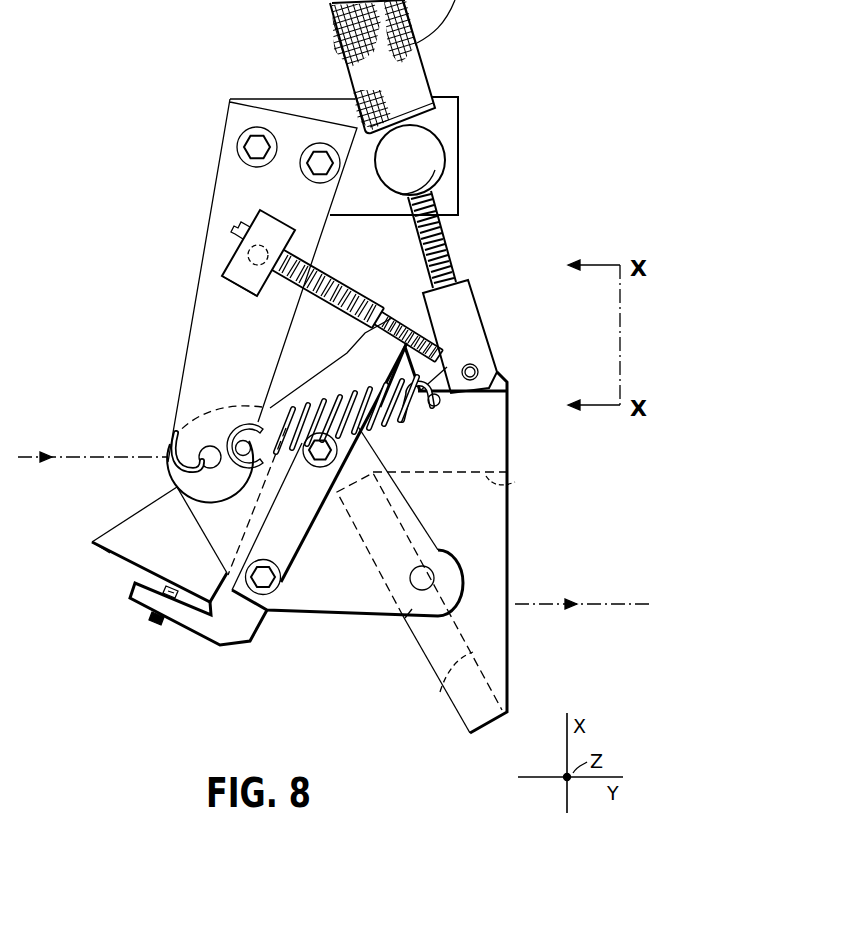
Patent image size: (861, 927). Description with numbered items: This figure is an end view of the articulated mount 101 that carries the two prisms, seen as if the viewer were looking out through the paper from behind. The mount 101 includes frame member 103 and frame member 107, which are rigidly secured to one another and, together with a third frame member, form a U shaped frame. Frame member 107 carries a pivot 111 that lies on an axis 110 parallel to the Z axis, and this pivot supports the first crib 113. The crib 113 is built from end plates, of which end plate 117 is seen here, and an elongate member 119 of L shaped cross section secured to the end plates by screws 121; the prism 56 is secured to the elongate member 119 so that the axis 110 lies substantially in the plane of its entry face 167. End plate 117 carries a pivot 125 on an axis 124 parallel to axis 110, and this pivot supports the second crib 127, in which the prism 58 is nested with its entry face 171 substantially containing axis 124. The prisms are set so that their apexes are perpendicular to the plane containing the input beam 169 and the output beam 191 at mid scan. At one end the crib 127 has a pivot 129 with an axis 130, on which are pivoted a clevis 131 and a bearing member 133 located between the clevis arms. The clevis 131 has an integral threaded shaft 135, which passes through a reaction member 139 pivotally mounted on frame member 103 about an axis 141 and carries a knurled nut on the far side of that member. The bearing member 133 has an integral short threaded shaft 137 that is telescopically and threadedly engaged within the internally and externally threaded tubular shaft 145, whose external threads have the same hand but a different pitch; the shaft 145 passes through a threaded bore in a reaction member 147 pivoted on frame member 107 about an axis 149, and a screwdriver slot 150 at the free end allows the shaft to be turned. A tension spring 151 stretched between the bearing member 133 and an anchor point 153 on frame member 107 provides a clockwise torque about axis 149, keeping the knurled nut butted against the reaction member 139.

The prism 56 is at (137, 552).
The prism 58 is at (505, 478).
The articulated mount 101 is at (523, 171).
The frame member 103 is at (450, 122).
The frame member 107 is at (227, 172).
The axis 110 is at (177, 432).
The pivot 111 is at (204, 457).
The first crib 113 is at (277, 628).
The end plate 117 is at (333, 597).
The elongate member 119 is at (233, 626).
The screws 121 is at (280, 568).
The axis 124 is at (424, 580).
The pivot 125 is at (432, 587).
The second crib 127 is at (503, 560).
The pivot 129 is at (478, 370).
The axis 130 is at (475, 385).
The clevis 131 is at (470, 333).
The bearing member 133 is at (447, 412).
The threaded shaft 135 is at (460, 268).
The short threaded shaft 137 is at (384, 312).
The reaction member 139 is at (435, 170).
The axis 141 is at (408, 160).
The tubular shaft 145 is at (338, 285).
The reaction member 147 is at (222, 278).
The axis 149 is at (262, 252).
The screwdriver slot 150 is at (232, 245).
The tension spring 151 is at (300, 405).
The anchor point 153 is at (243, 440).
The entry face 167 is at (133, 517).
The input beam 169 is at (32, 456).
The entry face 171 is at (440, 690).
The output beam 191 is at (607, 605).